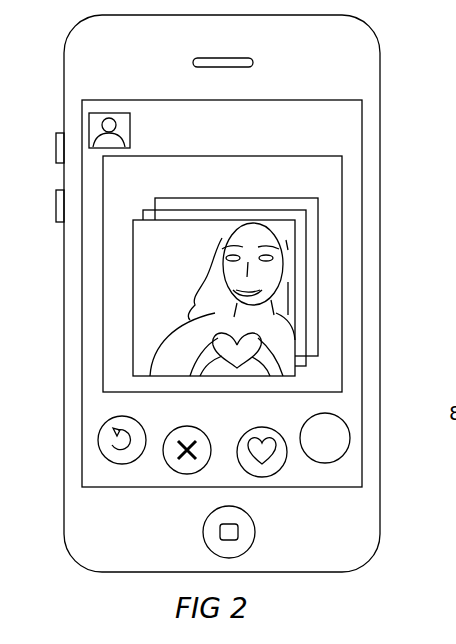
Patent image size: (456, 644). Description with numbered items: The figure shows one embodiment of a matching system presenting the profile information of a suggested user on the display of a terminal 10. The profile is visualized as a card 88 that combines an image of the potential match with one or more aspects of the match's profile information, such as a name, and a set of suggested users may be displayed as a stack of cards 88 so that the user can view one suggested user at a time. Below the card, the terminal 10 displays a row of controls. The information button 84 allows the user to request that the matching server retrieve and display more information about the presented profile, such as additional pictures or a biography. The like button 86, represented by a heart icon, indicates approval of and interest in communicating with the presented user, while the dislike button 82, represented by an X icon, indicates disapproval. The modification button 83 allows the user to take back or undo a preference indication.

The terminal 10 is at (383, 78).
The dislike button 82 is at (187, 476).
The modification button 83 is at (97, 440).
The information button 84 is at (350, 438).
The like button 86 is at (262, 478).
The card 88 is at (343, 235).